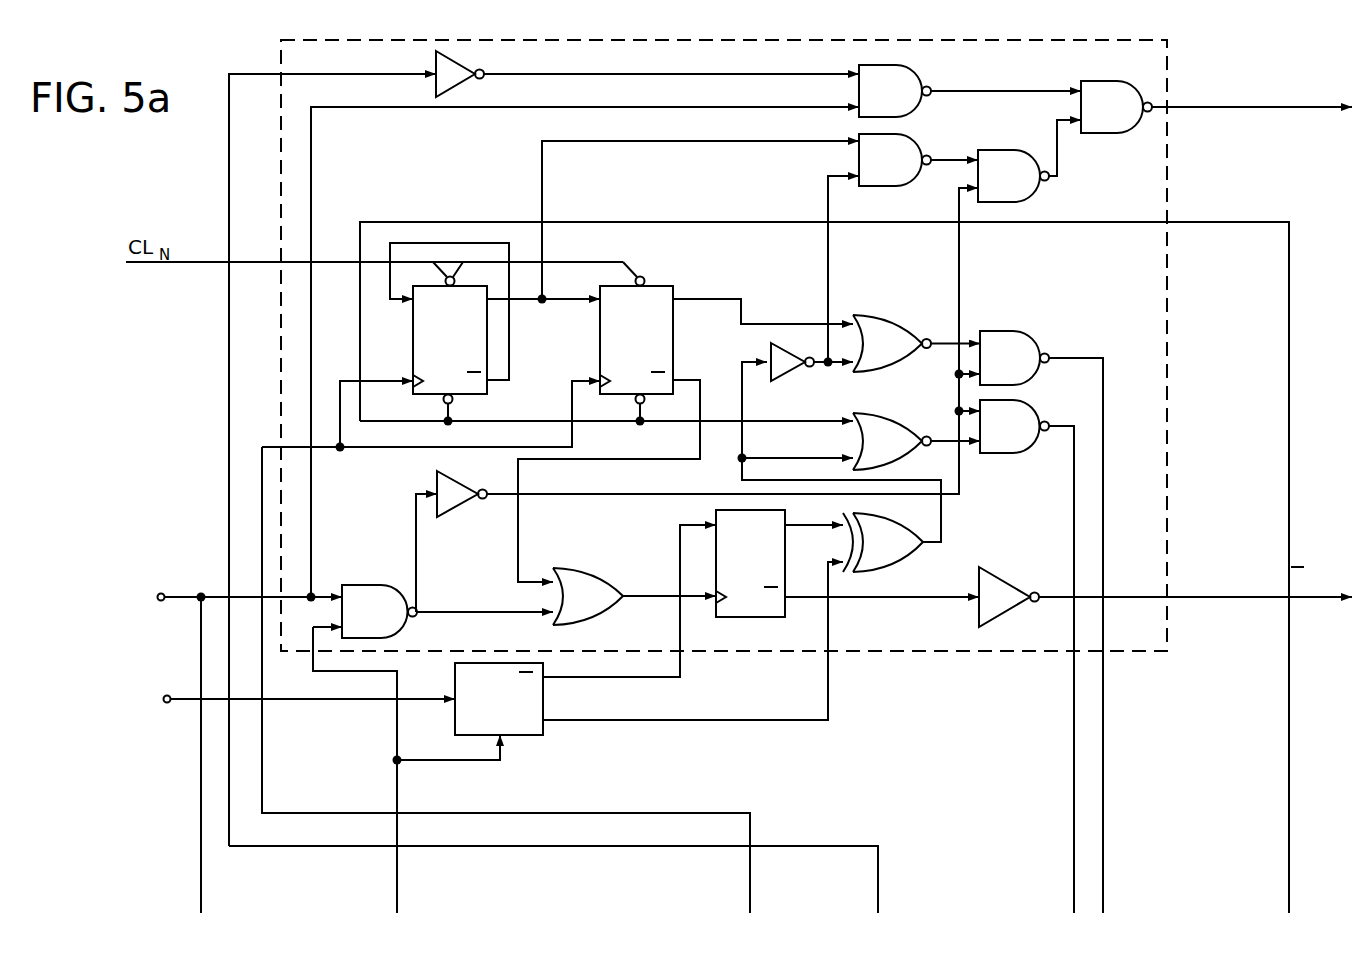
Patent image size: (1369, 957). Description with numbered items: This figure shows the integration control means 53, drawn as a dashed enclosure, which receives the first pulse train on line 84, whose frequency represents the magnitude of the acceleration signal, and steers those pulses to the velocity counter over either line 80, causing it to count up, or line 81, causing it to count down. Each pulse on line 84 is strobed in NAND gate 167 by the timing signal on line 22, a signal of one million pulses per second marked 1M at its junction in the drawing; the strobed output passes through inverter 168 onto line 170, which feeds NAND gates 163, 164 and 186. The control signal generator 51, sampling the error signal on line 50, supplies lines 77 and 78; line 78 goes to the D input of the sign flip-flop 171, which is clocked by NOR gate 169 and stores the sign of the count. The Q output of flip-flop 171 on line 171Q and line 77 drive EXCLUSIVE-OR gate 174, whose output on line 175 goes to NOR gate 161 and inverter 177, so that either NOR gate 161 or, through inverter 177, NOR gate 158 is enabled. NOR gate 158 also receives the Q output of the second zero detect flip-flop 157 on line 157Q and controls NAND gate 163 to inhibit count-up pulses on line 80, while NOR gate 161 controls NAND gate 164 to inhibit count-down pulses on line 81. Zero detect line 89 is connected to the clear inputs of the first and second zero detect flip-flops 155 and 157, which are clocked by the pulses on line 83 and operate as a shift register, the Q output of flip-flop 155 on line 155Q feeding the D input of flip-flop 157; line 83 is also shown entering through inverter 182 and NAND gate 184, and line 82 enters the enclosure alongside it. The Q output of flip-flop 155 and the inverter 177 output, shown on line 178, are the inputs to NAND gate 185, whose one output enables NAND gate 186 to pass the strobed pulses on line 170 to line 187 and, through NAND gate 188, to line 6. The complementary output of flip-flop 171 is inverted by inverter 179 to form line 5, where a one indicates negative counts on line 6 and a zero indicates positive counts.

The integration control means 53 is at (1167, 64).
The line 22 is at (182, 596).
The junction point 1M is at (294, 594).
The line 83 is at (384, 73).
The inverter 182 is at (470, 70).
The NAND gate 184 is at (912, 78).
The NAND gate 185 is at (904, 136).
The NAND gate 186 is at (984, 152).
The line 187 is at (1059, 158).
The NAND gate 188 is at (1108, 80).
The line 6 is at (1258, 107).
The zero detect line 89 is at (360, 334).
The signal line 82 is at (750, 893).
The first zero detect flip-flop 155 is at (413, 333).
The Q output line of flip-flop ZD1 155Q is at (542, 165).
The second zero detect flip-flop 157 is at (673, 340).
The Q output line of flip-flop ZD2 157Q is at (741, 300).
The signal line 178 is at (828, 256).
The line 170 is at (959, 256).
The NOR gate 158 is at (912, 312).
The NOR gate 161 is at (910, 408).
The inverter 177 is at (784, 382).
The line 175 is at (941, 532).
The NAND gate 163 is at (1030, 330).
The NAND gate 164 is at (995, 454).
The line 80 is at (1103, 893).
The line 81 is at (1074, 893).
The inverter 168 is at (437, 478).
The NAND gate 167 is at (382, 585).
The line 84 is at (462, 761).
The line 50 is at (182, 698).
The control signal generator 51 is at (522, 736).
The line 78 is at (590, 678).
The line 77 is at (590, 721).
The NOR gate 169 is at (606, 546).
The sign flip-flop 171 is at (762, 617).
The line 171Q is at (790, 525).
The EXCLUSIVE-OR gate 174 is at (896, 568).
The inverter 179 is at (1005, 570).
The line 5 is at (1318, 597).